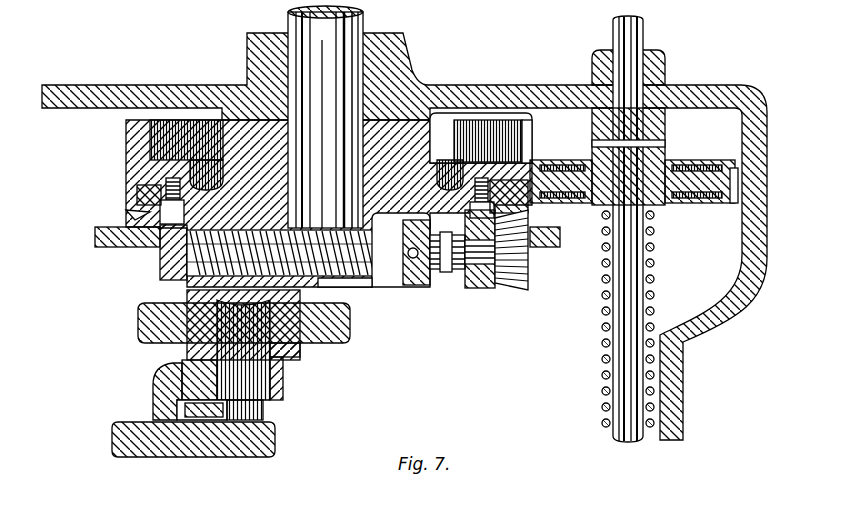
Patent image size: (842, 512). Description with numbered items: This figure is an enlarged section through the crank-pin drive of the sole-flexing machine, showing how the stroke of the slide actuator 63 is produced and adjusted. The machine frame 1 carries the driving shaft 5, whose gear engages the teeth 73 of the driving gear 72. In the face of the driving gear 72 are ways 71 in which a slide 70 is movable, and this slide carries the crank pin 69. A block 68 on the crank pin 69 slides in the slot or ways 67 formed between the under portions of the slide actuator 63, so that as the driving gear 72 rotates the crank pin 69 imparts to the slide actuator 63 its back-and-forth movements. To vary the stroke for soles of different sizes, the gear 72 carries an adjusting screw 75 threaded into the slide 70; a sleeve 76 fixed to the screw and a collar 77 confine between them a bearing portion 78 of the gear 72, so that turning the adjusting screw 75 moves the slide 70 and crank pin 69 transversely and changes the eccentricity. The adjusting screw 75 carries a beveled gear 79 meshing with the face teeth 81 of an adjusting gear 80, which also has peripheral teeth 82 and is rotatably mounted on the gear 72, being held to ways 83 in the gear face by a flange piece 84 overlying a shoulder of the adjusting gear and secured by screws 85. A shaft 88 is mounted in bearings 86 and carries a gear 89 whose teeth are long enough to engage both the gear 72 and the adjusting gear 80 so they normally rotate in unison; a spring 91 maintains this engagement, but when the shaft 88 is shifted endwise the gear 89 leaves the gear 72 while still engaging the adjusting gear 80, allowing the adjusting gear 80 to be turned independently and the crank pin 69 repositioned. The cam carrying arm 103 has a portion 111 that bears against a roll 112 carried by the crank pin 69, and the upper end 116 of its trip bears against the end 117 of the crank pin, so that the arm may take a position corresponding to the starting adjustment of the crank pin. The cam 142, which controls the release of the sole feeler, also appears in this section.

The machine frame 1 is at (762, 146).
The driving shaft 5 is at (358, 19).
The slide actuator 63 is at (150, 320).
The slot or ways 67 is at (282, 323).
The block 68 is at (300, 352).
The crank pin 69 is at (255, 372).
The slide 70 is at (207, 278).
The ways 71 is at (360, 279).
The driving gear 72 is at (410, 133).
The teeth 73 is at (526, 136).
The adjusting screw 75 is at (438, 262).
The sleeve 76 is at (410, 284).
The collar 77 is at (482, 263).
The bearing portion 78 is at (449, 272).
The beveled gear 79 is at (523, 290).
The adjusting gear 80 is at (142, 210).
The face teeth 81 is at (145, 220).
The peripheral teeth 82 is at (134, 196).
The ways 83 is at (153, 183).
The flange piece 84 is at (123, 206).
The screws 85 is at (173, 186).
The bearings 86 is at (662, 72).
The shaft 88 is at (625, 36).
The gear 89 is at (666, 204).
The spring 91 is at (655, 276).
The cam carrying arm 103 is at (168, 450).
The portion 111 is at (197, 372).
The roll 112 is at (287, 390).
The upper end of trip 116 is at (178, 408).
The end of crank pin 117 is at (264, 410).
The cam 142 is at (97, 236).